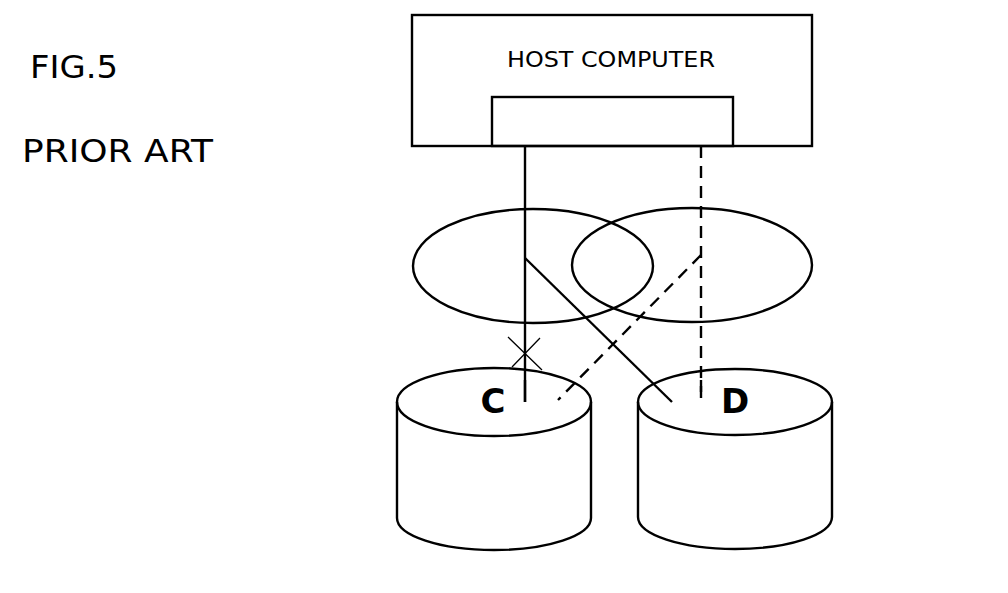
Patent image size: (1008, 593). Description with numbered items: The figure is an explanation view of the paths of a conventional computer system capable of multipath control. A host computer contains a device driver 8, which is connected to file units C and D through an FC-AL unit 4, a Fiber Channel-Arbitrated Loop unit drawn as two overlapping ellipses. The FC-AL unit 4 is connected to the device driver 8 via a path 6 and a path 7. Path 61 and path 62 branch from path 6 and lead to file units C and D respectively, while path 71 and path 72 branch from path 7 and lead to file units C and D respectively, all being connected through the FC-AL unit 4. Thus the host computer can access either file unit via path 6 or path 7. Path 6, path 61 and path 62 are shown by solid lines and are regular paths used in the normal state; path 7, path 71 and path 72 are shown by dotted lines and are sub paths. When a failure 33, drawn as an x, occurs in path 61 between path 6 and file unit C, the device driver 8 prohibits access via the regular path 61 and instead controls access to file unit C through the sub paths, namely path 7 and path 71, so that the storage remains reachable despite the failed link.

The device driver 8 is at (727, 120).
The FC-AL unit 4 is at (800, 262).
The path 6 is at (525, 180).
The path 7 is at (703, 175).
The path 62 is at (597, 329).
The path 71 is at (633, 323).
The path 61 is at (525, 388).
The path 72 is at (703, 352).
The failure 33 is at (542, 338).